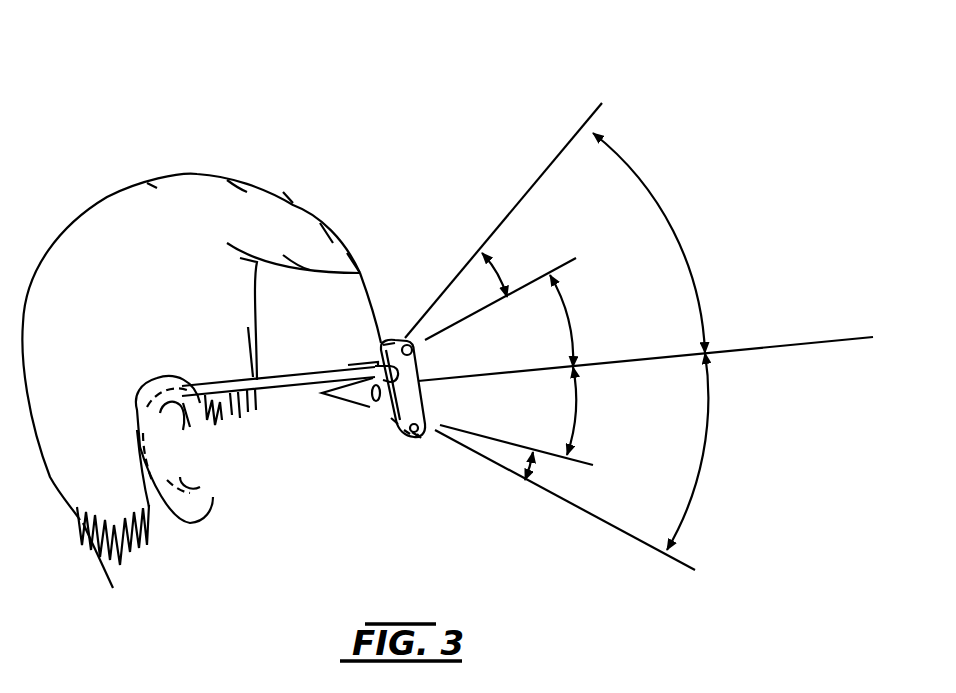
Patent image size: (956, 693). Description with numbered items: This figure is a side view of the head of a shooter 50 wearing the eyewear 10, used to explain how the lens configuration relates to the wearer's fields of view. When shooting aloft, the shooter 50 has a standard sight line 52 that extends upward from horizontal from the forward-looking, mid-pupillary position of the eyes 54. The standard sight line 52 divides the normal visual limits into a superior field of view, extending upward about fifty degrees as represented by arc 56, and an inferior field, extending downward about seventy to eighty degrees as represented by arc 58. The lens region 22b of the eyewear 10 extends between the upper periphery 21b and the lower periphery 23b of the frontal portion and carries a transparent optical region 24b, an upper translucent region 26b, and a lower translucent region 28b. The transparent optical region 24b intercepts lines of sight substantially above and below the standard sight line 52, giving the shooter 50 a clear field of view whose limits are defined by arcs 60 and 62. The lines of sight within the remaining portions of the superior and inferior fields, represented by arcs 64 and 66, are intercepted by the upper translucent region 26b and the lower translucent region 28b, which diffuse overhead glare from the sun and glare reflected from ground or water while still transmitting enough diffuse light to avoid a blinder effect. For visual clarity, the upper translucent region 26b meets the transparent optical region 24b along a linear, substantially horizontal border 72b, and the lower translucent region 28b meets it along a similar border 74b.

The eyewear 10 is at (295, 388).
The shooter 50 is at (293, 203).
The standard sight line 52 is at (790, 343).
The eyes 54 is at (360, 403).
The arc representing upper field of view 56 is at (672, 228).
The arc representing lower field of view 58 is at (702, 453).
The arc defining upper visual limit of transparent region 60 is at (560, 322).
The arc defining lower visual limit of transparent region 62 is at (574, 411).
The arc of superior field intercepted by upper translucent region 64 is at (497, 262).
The arc of inferior field intercepted by lower translucent region 66 is at (535, 468).
The upper periphery 21b is at (398, 338).
The right eye lens region 22b is at (407, 432).
The lower periphery 23b is at (419, 436).
The transparent optical region 24b is at (392, 420).
The upper translucent region 26b is at (380, 341).
The lower translucent region 28b is at (415, 432).
The border of upper translucent region 72b is at (418, 349).
The border of lower translucent region 74b is at (427, 412).